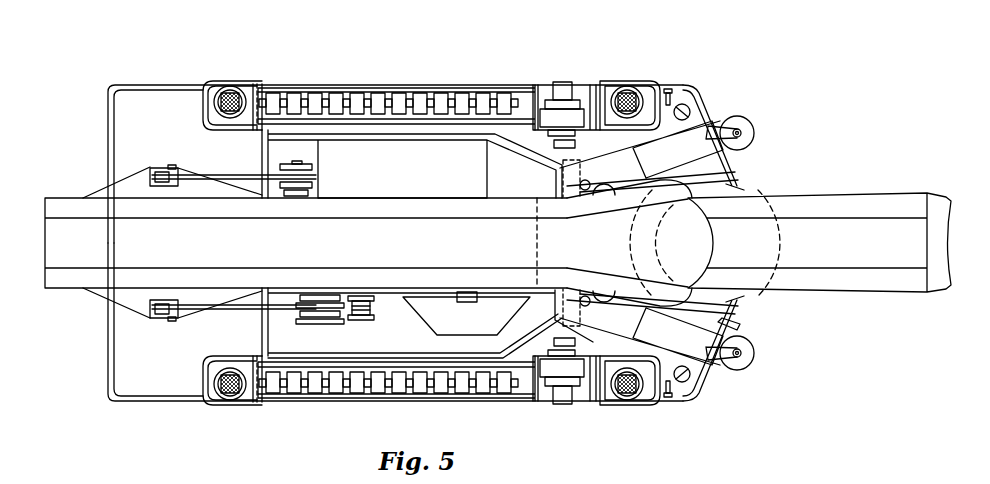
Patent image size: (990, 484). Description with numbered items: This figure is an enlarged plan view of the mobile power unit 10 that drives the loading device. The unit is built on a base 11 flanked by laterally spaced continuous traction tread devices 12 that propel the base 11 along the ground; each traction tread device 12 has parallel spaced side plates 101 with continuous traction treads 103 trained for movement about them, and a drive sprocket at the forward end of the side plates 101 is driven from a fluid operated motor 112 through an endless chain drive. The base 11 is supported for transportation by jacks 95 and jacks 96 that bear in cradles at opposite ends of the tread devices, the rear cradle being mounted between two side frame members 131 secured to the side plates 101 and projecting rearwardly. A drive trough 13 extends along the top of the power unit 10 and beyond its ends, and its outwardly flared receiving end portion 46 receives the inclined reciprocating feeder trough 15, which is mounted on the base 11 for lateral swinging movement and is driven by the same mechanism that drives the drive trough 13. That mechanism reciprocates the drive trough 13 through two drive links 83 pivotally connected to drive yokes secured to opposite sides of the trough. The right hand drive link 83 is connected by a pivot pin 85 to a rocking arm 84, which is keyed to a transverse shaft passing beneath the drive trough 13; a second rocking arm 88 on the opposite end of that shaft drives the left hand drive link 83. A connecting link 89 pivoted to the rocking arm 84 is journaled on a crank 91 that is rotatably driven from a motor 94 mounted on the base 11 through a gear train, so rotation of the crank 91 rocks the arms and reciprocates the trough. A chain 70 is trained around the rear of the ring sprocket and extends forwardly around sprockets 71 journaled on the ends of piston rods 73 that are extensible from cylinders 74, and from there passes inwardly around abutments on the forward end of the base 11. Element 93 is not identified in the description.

The mobile power unit 10 is at (710, 82).
The base 11 is at (170, 404).
The continuous traction tread device 12 is at (400, 85).
The drive trough 13 is at (72, 291).
The feeder trough 15 is at (862, 195).
The outwardly flared receiving end portion 46 is at (748, 184).
The chain 70 is at (730, 321).
The sprocket 71 is at (752, 125).
The piston rod 73 is at (745, 156).
The cylinder 74 is at (690, 142).
The drive link 83 is at (232, 176).
The rocking arm 84 is at (176, 166).
The pivot pin 85 is at (112, 193).
The rocking arm 88 is at (314, 167).
The connecting link 89 is at (330, 307).
The crank 91 is at (358, 320).
The bracket 93 is at (377, 298).
The motor 94 is at (460, 322).
The jack 95 is at (640, 92).
The jack 96 is at (218, 96).
The side plate 101 is at (306, 365).
The continuous traction tread 103 is at (323, 93).
The motor 112 is at (584, 108).
The side frame member 131 is at (272, 86).